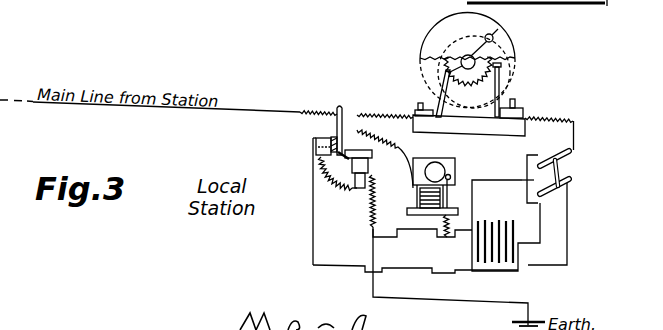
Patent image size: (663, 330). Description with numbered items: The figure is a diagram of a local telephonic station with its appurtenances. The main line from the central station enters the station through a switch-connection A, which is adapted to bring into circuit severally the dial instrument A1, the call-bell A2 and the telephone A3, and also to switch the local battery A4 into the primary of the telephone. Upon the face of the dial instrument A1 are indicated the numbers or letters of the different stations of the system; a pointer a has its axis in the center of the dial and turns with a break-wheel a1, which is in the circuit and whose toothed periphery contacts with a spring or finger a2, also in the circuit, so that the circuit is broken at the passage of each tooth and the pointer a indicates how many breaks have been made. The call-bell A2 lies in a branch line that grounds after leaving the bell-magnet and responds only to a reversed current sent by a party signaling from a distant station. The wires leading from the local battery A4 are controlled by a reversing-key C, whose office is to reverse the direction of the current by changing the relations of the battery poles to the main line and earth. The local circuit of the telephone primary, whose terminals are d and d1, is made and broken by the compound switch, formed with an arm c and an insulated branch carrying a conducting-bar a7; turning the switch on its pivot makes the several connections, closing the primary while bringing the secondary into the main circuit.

The switch-connection A is at (336, 122).
The dial instrument A1 is at (516, 70).
The call-bell A2 is at (442, 195).
The telephone A3 is at (363, 189).
The local battery A4 is at (506, 225).
The pointer a is at (479, 49).
The break-wheel a1 is at (468, 79).
The spring or finger a2 is at (355, 148).
The conducting-bar a7 is at (316, 148).
The arm c is at (340, 136).
The reversing-key C is at (554, 177).
The primary terminal d is at (325, 139).
The primary terminal d1 is at (335, 171).